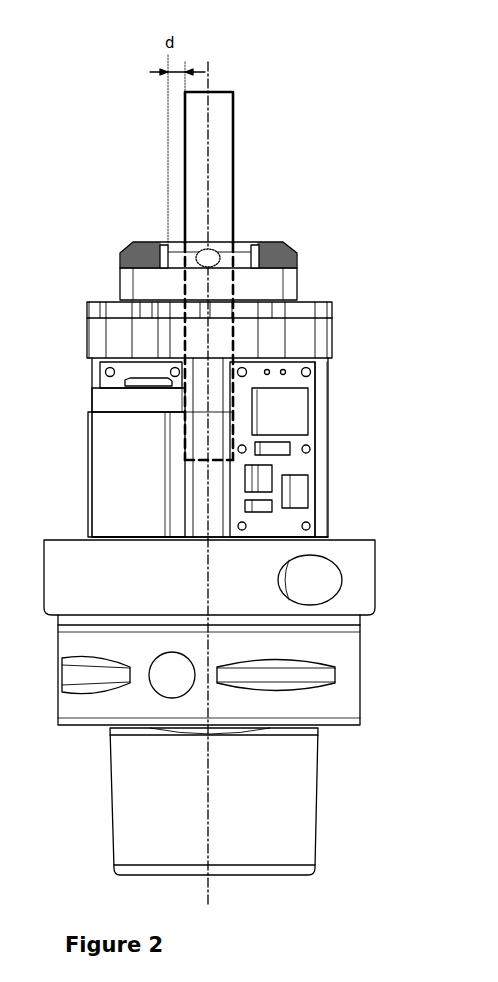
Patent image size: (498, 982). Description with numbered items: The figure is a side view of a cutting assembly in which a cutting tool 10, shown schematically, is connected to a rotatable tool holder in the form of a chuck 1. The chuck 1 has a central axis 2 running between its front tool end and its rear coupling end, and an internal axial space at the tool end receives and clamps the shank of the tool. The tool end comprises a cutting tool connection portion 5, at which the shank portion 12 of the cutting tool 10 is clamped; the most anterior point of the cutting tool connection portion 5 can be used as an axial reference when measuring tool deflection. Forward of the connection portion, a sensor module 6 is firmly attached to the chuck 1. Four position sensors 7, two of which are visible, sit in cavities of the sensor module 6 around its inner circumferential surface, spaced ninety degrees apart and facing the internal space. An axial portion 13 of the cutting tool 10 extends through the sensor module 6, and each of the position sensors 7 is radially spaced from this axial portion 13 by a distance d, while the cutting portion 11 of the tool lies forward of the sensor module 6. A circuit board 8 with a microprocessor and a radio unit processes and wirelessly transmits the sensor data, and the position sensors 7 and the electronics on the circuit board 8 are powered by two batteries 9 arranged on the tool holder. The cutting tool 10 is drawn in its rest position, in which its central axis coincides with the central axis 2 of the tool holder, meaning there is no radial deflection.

The chuck 1 is at (350, 357).
The central axis 2 is at (212, 80).
The cutting tool connection portion 5 is at (204, 427).
The sensor module 6 is at (302, 297).
The position sensors 7 is at (250, 250).
The circuit board 8 is at (292, 462).
The batteries 9 is at (103, 502).
The cutting tool 10 is at (249, 265).
The cutting portion 11 is at (233, 107).
The shank portion 12 is at (232, 367).
The axial portion 13 is at (228, 267).